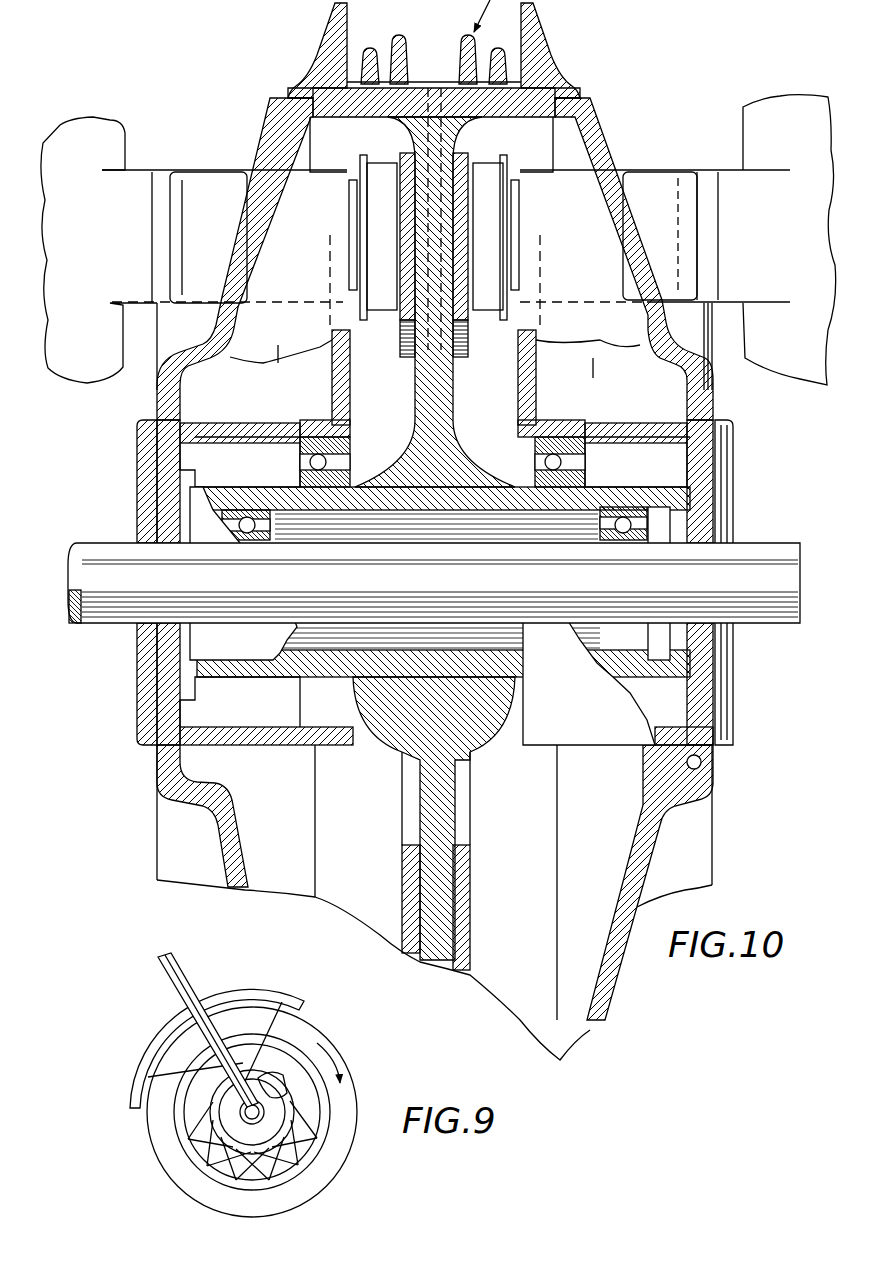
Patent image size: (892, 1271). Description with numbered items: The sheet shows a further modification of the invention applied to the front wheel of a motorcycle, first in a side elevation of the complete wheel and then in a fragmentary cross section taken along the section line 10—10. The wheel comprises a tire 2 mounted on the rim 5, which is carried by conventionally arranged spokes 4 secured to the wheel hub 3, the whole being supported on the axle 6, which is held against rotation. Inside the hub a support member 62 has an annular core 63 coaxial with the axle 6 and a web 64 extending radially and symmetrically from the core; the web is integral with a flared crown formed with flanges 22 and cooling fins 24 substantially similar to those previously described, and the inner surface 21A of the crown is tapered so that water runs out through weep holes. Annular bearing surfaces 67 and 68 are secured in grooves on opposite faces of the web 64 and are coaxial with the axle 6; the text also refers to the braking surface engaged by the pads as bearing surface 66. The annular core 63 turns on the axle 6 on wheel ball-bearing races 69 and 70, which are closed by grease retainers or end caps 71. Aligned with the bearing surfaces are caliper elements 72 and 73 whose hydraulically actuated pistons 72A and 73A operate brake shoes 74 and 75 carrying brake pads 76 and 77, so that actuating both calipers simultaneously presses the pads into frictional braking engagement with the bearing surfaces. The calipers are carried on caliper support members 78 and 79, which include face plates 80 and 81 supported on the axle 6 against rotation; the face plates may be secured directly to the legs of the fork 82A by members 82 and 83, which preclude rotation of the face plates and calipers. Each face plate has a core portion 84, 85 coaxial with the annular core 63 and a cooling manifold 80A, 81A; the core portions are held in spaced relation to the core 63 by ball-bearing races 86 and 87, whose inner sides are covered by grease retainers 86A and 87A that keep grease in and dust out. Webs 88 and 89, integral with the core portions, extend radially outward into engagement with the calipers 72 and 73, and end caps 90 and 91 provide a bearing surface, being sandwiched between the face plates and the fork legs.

In FIG. 9, the tire 2 is at (165, 1135).
In FIG. 9, the wheel hub 3 is at (215, 1090).
In FIG. 9, the spokes 4 is at (302, 1158).
In FIG. 9, the rim 5 is at (324, 1145).
In FIG. 10, the axle 6 is at (763, 546).
In FIG. 9, the axle 6 is at (264, 1110).
In FIG. 9, the section line 10 is at (292, 1060).
In FIG. 10, the inner surface of crown 21A is at (528, 120).
In FIG. 10, the cooling fin posts 22 is at (330, 36).
In FIG. 10, the cooling fins 24 is at (394, 42).
In FIG. 10, the support member 62 is at (424, 380).
In FIG. 10, the annular core 63 is at (306, 508).
In FIG. 10, the web 64 is at (463, 370).
In FIG. 10, the bearing surface 66 is at (447, 85).
In FIG. 10, the bearing surface 67 is at (465, 156).
In FIG. 10, the bearing surface 68 is at (404, 158).
In FIG. 10, the wheel ball-bearing race 69 is at (248, 541).
In FIG. 10, the wheel ball-bearing race 70 is at (601, 534).
In FIG. 10, the grease retainer or end cap 71 is at (651, 548).
In FIG. 10, the caliper element 72 is at (218, 213).
In FIG. 9, the caliper element 72 is at (287, 1083).
In FIG. 10, the hydraulically actuated piston 72A is at (350, 221).
In FIG. 10, the caliper element 73 is at (665, 206).
In FIG. 10, the hydraulically actuated piston 73A is at (519, 221).
In FIG. 10, the brake shoe 74 is at (360, 192).
In FIG. 10, the brake shoe 75 is at (507, 192).
In FIG. 10, the brake pad 76 is at (389, 252).
In FIG. 10, the brake pad 77 is at (496, 252).
In FIG. 10, the caliper support member 78 is at (280, 365).
In FIG. 10, the caliper support member 79 is at (595, 378).
In FIG. 10, the face plate 80 is at (268, 130).
In FIG. 10, the cooling manifold 80A is at (180, 835).
In FIG. 10, the face plate 81 is at (592, 123).
In FIG. 10, the cooling manifold 81A is at (692, 838).
In FIG. 10, the securing member 82 is at (156, 212).
In FIG. 9, the securing member 82 is at (260, 1070).
In FIG. 9, the fork 82A is at (187, 968).
In FIG. 10, the securing member 83 is at (702, 263).
In FIG. 10, the core portion 84 is at (252, 430).
In FIG. 10, the core portion 85 is at (620, 438).
In FIG. 10, the ball-bearing race 86 is at (352, 460).
In FIG. 10, the bearing grease retainer 86A is at (341, 470).
In FIG. 10, the ball-bearing race 87 is at (531, 460).
In FIG. 10, the bearing grease retainer 87A is at (548, 466).
In FIG. 10, the web 88 is at (340, 378).
In FIG. 10, the web 89 is at (530, 381).
In FIG. 10, the end cap 90 is at (141, 476).
In FIG. 10, the end cap 91 is at (733, 475).